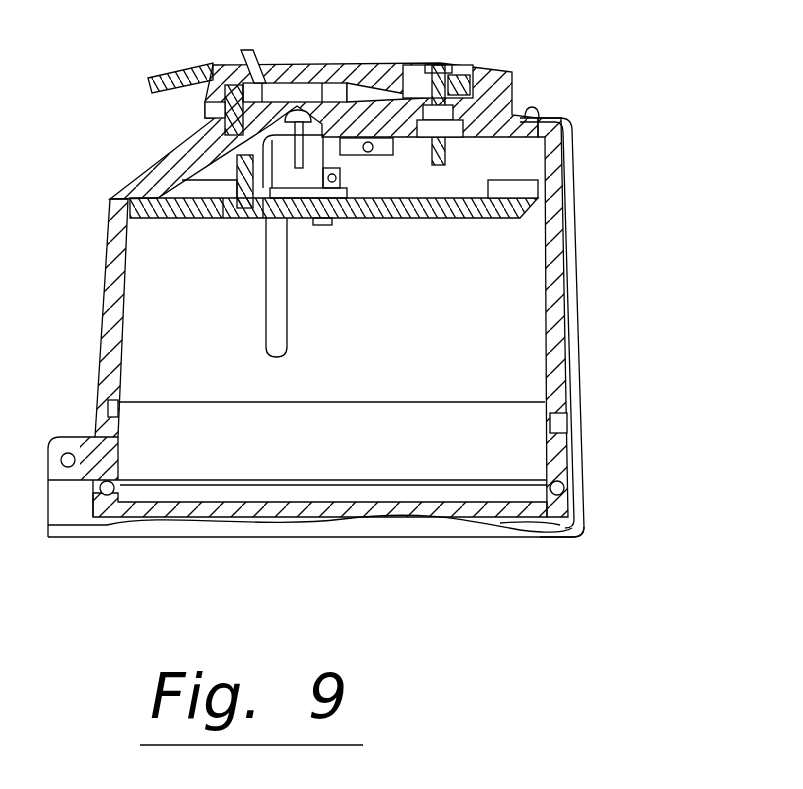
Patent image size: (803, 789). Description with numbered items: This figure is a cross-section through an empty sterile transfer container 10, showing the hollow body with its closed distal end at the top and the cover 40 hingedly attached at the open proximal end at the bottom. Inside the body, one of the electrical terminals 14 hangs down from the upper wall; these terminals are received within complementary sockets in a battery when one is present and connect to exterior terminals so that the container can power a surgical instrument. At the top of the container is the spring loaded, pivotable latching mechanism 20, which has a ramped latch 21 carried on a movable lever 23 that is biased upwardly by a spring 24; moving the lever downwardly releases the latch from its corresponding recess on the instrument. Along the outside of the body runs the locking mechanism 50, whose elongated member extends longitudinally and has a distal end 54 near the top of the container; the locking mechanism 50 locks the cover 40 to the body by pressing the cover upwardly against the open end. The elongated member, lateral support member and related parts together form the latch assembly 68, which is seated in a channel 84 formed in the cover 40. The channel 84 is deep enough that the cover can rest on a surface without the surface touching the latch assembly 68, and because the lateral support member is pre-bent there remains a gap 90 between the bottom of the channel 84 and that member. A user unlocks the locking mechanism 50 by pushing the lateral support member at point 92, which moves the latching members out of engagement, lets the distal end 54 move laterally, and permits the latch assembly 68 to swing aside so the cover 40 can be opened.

The sterile transfer container 10 is at (108, 208).
The electrical terminals 14 is at (288, 327).
The latching mechanism 20 is at (185, 68).
The ramped latch 21 is at (243, 50).
The movable lever 23 is at (147, 80).
The spring 24 is at (218, 117).
The cover 40 is at (110, 507).
The locking mechanism 50 is at (582, 477).
The distal end of elongated member 54 is at (567, 118).
The latch assembly 68 is at (340, 527).
The channel 84 is at (437, 537).
The gap 90 is at (555, 523).
The point 92 is at (550, 540).